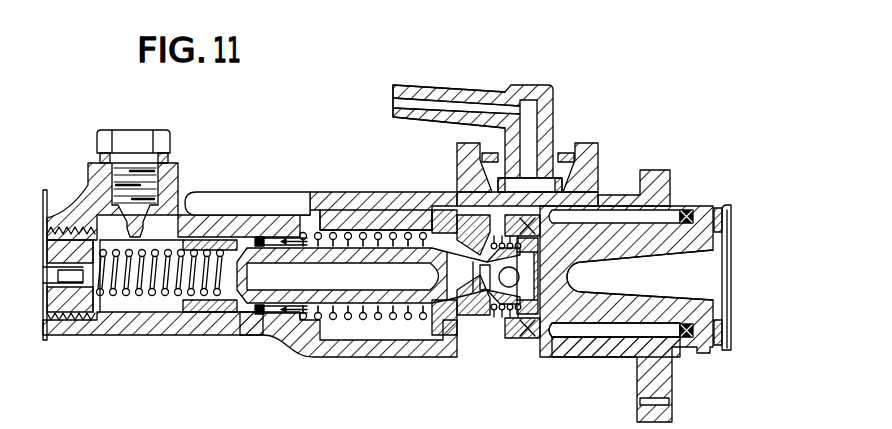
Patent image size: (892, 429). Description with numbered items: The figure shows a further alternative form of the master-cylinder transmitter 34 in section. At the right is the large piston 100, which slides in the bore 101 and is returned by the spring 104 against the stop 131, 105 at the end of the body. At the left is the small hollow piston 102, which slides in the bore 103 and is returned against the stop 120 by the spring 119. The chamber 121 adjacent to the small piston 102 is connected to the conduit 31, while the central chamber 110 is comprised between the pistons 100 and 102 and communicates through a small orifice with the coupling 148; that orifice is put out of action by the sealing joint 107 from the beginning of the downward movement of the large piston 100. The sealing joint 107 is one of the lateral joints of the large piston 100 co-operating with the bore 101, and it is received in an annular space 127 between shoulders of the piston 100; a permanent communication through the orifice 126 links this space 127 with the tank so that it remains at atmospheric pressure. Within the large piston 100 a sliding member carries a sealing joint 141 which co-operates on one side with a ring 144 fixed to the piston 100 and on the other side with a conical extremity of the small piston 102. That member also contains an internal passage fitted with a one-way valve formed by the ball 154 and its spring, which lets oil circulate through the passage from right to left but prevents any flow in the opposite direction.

The conduit 31 is at (59, 270).
The master-cylinder transmitter 34 is at (261, 188).
The large piston 100 is at (625, 316).
The bore 101 is at (559, 338).
The small hollow piston 102 is at (318, 315).
The bore 103 is at (170, 312).
The spring 104 is at (378, 315).
The stop 105 is at (722, 205).
The sealing joint 107 is at (520, 317).
The central chamber 110 is at (375, 215).
The spring 119 is at (116, 296).
The stop 120 is at (280, 312).
The chamber 121 is at (173, 236).
The orifice 126 is at (552, 207).
The annular space 127 is at (592, 338).
The stop 131 is at (714, 207).
The sealing joint 141 is at (472, 310).
The ring 144 is at (440, 302).
The coupling 148 is at (430, 88).
The ball 154 is at (520, 277).